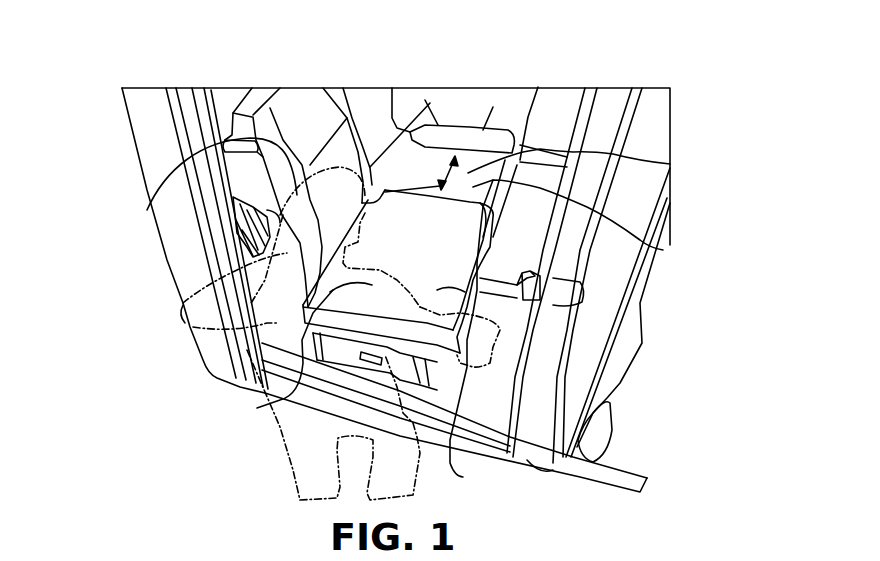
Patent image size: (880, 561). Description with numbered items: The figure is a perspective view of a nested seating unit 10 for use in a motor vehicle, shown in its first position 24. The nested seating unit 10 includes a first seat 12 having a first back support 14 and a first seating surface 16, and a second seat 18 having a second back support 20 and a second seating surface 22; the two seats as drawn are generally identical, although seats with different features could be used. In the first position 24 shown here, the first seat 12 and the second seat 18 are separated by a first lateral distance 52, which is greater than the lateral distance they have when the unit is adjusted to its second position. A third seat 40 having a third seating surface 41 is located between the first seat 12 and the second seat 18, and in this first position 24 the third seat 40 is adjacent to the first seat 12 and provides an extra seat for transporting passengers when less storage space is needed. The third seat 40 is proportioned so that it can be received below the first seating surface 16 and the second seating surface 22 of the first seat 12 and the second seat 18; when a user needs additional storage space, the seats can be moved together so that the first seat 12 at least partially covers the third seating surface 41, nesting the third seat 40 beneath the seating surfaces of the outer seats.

The nested seating unit 10 is at (131, 86).
The first seat 12 is at (257, 408).
The first back support 14 is at (147, 210).
The first seating surface 16 is at (473, 333).
The second seat 18 is at (493, 107).
The second back support 20 is at (417, 128).
The second seating surface 22 is at (538, 87).
The first position 24 is at (363, 80).
The third seat 40 is at (670, 164).
The third seating surface 41 is at (663, 250).
The first lateral distance 52 is at (440, 158).